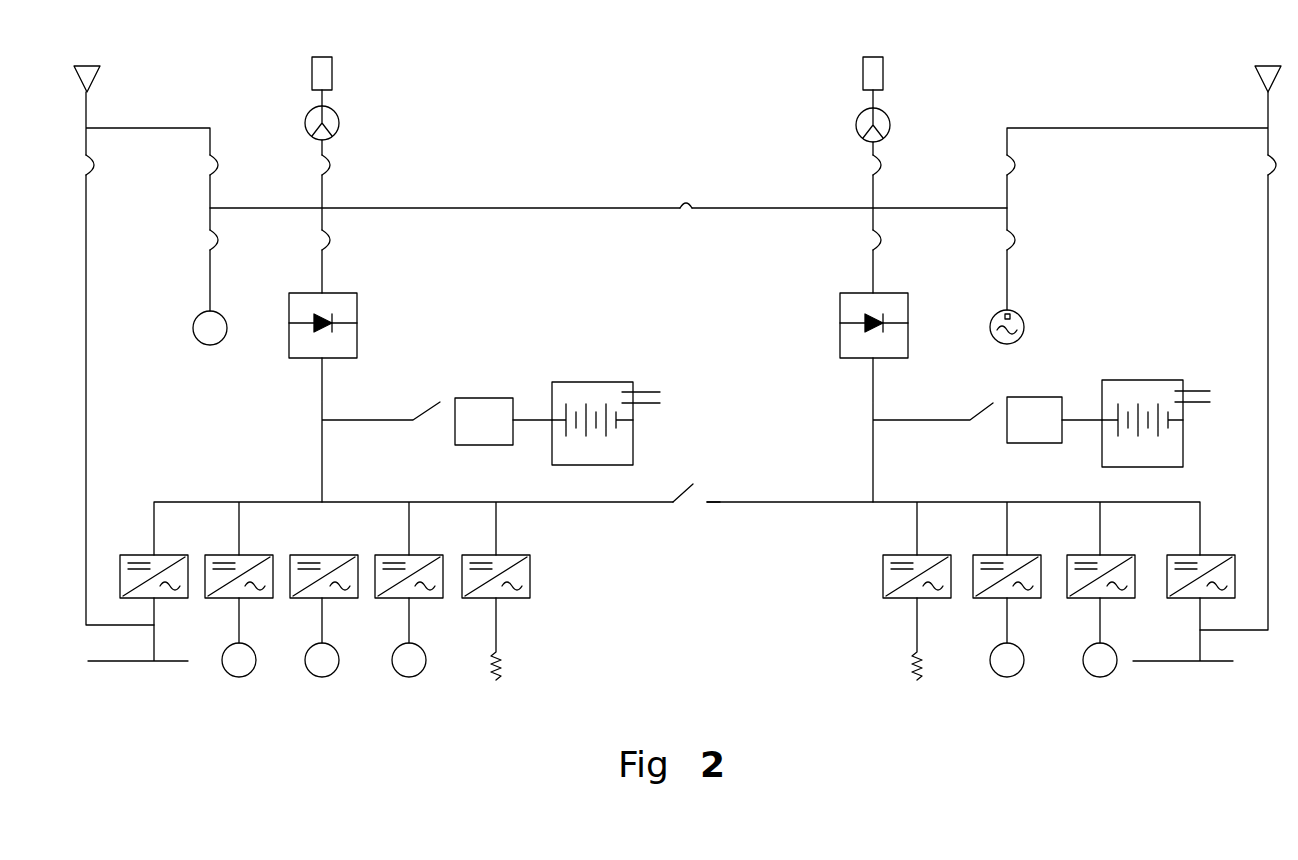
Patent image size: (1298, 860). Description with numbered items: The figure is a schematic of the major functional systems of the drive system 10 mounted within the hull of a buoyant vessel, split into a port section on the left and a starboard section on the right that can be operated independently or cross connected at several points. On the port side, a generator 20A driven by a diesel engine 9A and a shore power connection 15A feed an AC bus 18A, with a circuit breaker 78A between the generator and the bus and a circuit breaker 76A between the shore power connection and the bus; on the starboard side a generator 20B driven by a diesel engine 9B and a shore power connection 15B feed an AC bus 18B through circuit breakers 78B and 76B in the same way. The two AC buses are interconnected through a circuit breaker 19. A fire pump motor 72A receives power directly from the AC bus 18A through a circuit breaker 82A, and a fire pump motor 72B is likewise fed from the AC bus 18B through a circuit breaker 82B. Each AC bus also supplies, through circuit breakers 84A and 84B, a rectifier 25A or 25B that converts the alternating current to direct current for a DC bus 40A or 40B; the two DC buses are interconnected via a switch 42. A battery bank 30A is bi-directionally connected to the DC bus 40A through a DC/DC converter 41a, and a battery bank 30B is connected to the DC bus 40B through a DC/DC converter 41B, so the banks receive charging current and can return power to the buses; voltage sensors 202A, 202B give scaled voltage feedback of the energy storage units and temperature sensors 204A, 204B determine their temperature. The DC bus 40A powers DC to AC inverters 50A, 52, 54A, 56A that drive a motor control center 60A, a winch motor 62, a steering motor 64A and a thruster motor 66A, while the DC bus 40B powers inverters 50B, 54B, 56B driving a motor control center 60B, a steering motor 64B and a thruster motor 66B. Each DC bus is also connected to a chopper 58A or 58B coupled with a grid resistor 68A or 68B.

The drive system 10 is at (586, 110).
The shore power connection 15A is at (92, 72).
The shore power connection 15B is at (1258, 72).
The diesel engine 9A is at (332, 72).
The diesel engine 9B is at (883, 72).
The generator 20A is at (337, 128).
The generator 20B is at (888, 130).
The circuit breaker 76A is at (215, 168).
The circuit breaker 76B is at (1012, 167).
The circuit breaker 78A is at (328, 167).
The circuit breaker 78B is at (878, 167).
The AC bus 18A is at (452, 212).
The AC bus 18B is at (790, 211).
The circuit breaker 19 is at (684, 200).
The circuit breaker 82A is at (218, 247).
The circuit breaker 82B is at (1014, 245).
The circuit breaker 84A is at (329, 247).
The circuit breaker 84B is at (880, 245).
The fire pump motor 72A is at (202, 344).
The fire pump motor 72B is at (1000, 344).
The rectifier 25A is at (298, 364).
The rectifier 25B is at (852, 362).
The DC/DC converter 41a is at (478, 396).
The DC/DC converter 41B is at (1042, 395).
The battery bank 30A is at (592, 378).
The battery bank 30B is at (1150, 378).
The voltage sensor 202A is at (664, 391).
The temperature sensor 204A is at (664, 407).
The voltage sensor 202B is at (1215, 390).
The temperature sensor 204B is at (1215, 406).
The DC bus 40A is at (270, 500).
The DC bus 40B is at (946, 500).
The switch 42 is at (688, 488).
The inverter 50A is at (130, 557).
The inverter 50B is at (1180, 557).
The inverter 52 is at (215, 557).
The inverter 54A is at (300, 557).
The inverter 54B is at (1082, 557).
The inverter 56A is at (385, 557).
The inverter 56B is at (992, 557).
The chopper 58A is at (470, 557).
The chopper 58B is at (900, 557).
The motor control center 60A is at (136, 664).
The motor control center 60B is at (1180, 664).
The winch motor 62 is at (245, 678).
The steering motor 64A is at (322, 678).
The steering motor 64B is at (1100, 678).
The thruster motor 66A is at (408, 678).
The thruster motor 66B is at (1007, 678).
The grid resistor 68A is at (505, 666).
The grid resistor 68B is at (910, 668).